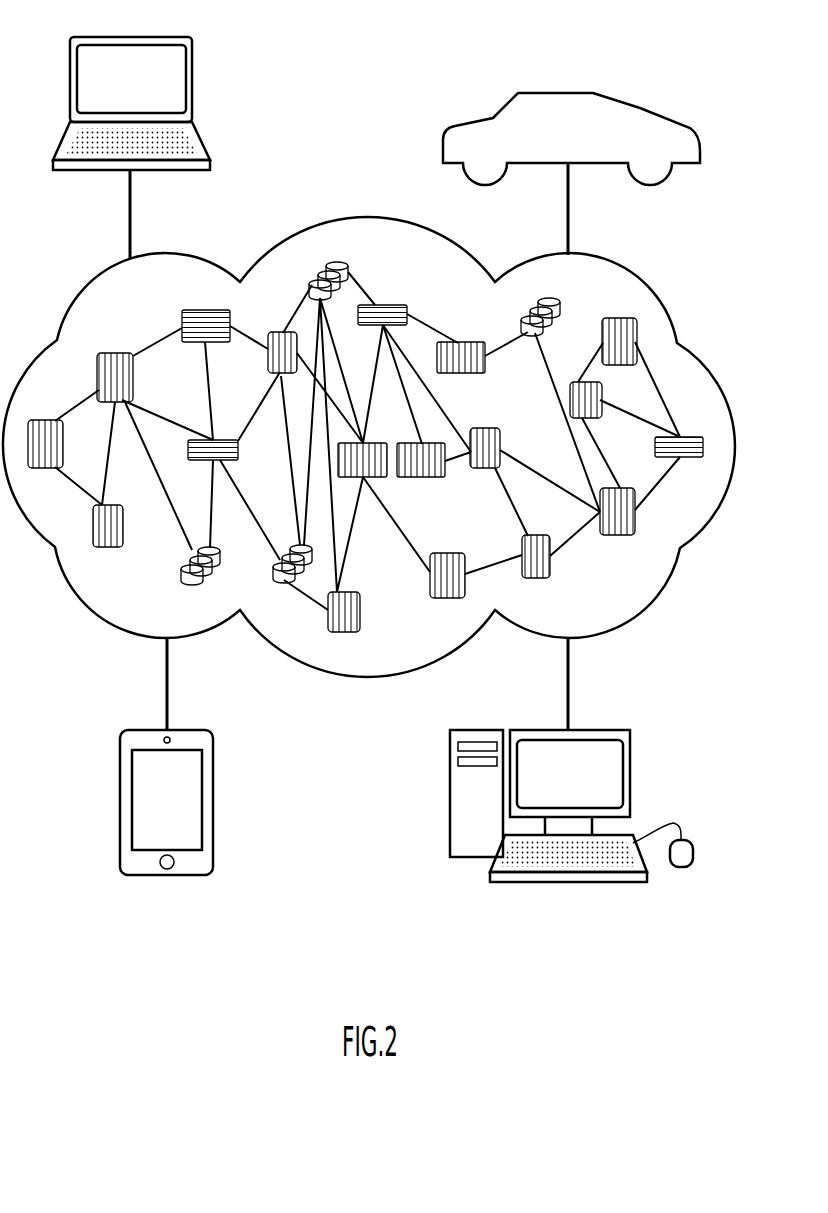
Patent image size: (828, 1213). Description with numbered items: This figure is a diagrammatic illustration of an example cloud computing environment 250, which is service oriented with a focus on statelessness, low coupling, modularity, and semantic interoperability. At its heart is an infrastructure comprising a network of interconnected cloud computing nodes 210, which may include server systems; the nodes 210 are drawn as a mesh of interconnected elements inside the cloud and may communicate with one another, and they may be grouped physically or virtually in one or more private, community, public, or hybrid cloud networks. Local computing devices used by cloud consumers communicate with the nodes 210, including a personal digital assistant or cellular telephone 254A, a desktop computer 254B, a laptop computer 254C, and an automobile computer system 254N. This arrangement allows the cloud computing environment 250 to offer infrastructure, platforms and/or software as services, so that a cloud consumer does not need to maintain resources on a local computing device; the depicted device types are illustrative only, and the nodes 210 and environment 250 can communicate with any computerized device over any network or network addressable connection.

The personal digital assistant or cellular telephone 254A is at (215, 787).
The desktop computer 254B is at (630, 752).
The laptop computer 254C is at (192, 83).
The automobile computer system 254N is at (535, 93).
The cloud computing environment 250 is at (710, 372).
The cloud computing nodes 210 is at (708, 492).